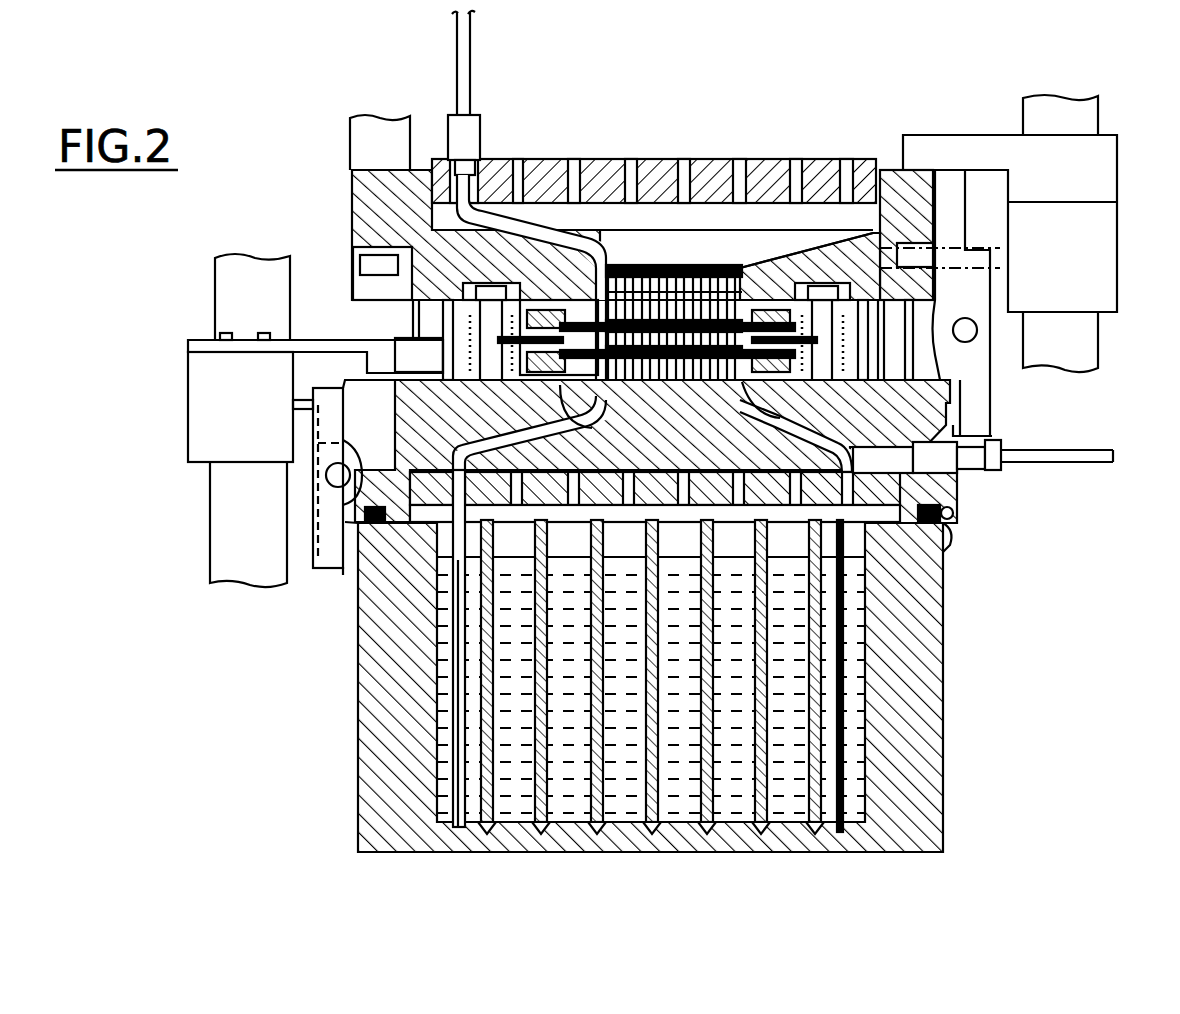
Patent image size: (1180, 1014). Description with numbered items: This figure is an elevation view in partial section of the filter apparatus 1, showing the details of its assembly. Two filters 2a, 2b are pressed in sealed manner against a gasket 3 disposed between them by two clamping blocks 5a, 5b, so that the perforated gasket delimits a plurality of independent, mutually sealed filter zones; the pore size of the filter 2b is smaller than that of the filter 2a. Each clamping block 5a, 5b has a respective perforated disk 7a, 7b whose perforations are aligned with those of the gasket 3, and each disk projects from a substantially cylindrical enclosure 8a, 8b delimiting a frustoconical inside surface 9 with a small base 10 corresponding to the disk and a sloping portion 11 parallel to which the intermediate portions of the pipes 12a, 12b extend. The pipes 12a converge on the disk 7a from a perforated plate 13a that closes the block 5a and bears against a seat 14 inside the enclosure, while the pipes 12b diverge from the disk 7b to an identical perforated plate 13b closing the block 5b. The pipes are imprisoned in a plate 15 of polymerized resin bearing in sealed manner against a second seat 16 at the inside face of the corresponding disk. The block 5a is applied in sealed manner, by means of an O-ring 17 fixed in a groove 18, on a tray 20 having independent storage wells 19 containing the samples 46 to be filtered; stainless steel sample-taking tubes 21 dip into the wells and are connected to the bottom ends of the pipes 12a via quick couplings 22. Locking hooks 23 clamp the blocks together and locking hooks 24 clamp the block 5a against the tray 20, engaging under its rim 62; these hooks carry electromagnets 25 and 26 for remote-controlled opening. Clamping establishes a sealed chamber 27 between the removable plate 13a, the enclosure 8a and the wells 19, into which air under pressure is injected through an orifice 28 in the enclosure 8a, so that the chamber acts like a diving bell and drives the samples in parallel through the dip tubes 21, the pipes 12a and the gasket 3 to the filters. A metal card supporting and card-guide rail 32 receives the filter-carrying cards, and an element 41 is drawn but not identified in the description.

The filter apparatus 1 is at (962, 120).
The filter 2a is at (676, 410).
The filter 2b is at (648, 268).
The gasket 3 is at (558, 300).
The clamping block 5a is at (972, 520).
The clamping block 5b is at (345, 187).
The perforated disk 7a is at (556, 395).
The perforated disk 7b is at (706, 300).
The cylindrical enclosure 8a is at (968, 434).
The cylindrical enclosure 8b is at (343, 240).
The frustoconical inside surface 9 is at (758, 252).
The small base 10 is at (652, 265).
The sloping portion 11 is at (797, 262).
The pipes 12a is at (536, 443).
The pipes 12b is at (515, 230).
The perforated plate 13a is at (688, 508).
The perforated plate 13b is at (692, 152).
The seat 14 is at (445, 520).
The plate of polymerized resin 15 is at (742, 420).
The second seat 16 is at (590, 432).
The O-ring 17 is at (968, 516).
The groove 18 is at (378, 500).
The storage wells 19 is at (490, 720).
The tray 20 is at (938, 678).
The sample-taking tubes 21 is at (470, 612).
The quick couplings 22 is at (488, 544).
The locking hooks 23 is at (985, 367).
The locking hooks 24 is at (322, 570).
The electromagnet 25 is at (196, 403).
The electromagnet 26 is at (1117, 234).
The sealed chamber 27 is at (562, 522).
The orifice 28 is at (968, 486).
The card supporting and card-guide rail 32 is at (748, 306).
The column 41 is at (212, 508).
The samples 46 is at (468, 668).
The rim 62 is at (952, 542).